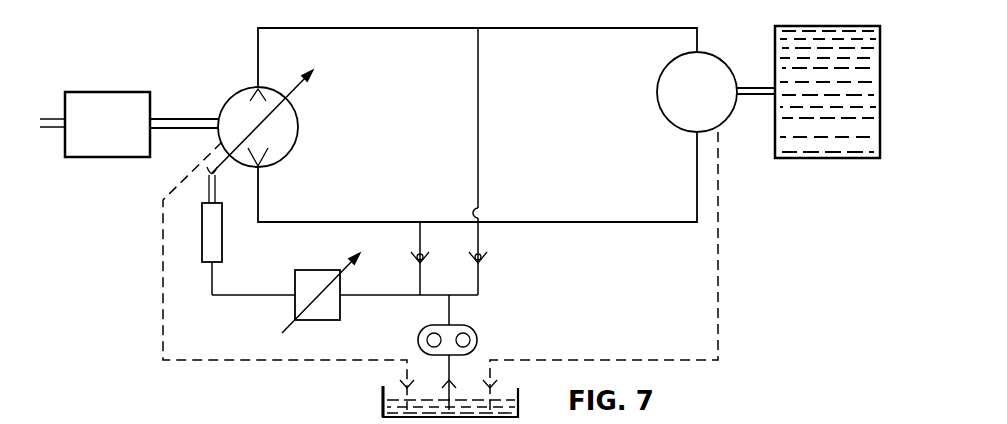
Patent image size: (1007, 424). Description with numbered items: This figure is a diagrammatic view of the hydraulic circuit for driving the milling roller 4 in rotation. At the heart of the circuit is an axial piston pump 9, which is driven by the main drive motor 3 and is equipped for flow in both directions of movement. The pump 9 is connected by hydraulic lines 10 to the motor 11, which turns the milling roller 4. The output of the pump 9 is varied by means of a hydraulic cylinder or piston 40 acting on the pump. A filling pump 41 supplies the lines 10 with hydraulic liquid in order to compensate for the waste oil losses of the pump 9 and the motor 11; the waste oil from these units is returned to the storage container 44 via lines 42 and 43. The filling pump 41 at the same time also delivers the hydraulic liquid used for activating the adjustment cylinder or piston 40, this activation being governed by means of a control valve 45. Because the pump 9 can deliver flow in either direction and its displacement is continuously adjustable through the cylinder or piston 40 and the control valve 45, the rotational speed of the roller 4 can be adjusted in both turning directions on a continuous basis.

The main drive motor 3 is at (89, 107).
The axial piston pump 9 is at (240, 105).
The lines 10 is at (533, 30).
The motor 11 is at (659, 90).
The milling roller 4 is at (820, 159).
The hydraulic cylinder or piston 40 is at (222, 252).
The filling pump 41 is at (465, 331).
The line 42 is at (277, 361).
The line 43 is at (597, 360).
The storage container 44 is at (383, 407).
The control valve 45 is at (330, 310).